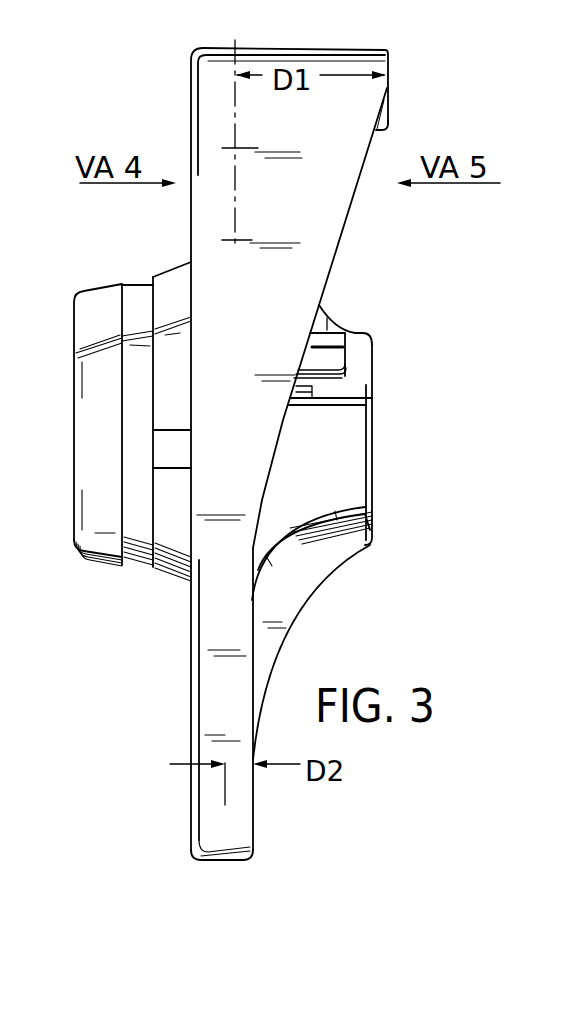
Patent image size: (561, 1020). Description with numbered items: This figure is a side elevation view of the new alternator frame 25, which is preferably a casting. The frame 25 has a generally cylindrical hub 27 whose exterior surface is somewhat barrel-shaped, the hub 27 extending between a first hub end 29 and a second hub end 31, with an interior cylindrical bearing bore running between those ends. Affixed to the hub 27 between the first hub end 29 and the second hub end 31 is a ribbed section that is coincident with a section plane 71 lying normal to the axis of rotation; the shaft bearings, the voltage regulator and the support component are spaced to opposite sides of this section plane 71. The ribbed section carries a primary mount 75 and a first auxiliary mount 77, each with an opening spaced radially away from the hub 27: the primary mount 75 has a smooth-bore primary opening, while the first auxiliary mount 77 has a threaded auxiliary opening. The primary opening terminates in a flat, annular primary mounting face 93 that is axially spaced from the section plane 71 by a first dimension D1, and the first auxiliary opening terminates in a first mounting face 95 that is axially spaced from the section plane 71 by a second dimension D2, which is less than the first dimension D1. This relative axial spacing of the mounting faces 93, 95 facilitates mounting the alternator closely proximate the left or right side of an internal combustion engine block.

The section plane 71 is at (208, 47).
The primary mount 75 is at (383, 62).
The primary mounting face 93 is at (388, 121).
The frame 25 is at (330, 250).
The first hub end 29 is at (362, 337).
The hub 27 is at (353, 433).
The second hub end 31 is at (85, 292).
The first auxiliary mount 77 is at (255, 828).
The first mounting face 95 is at (256, 842).